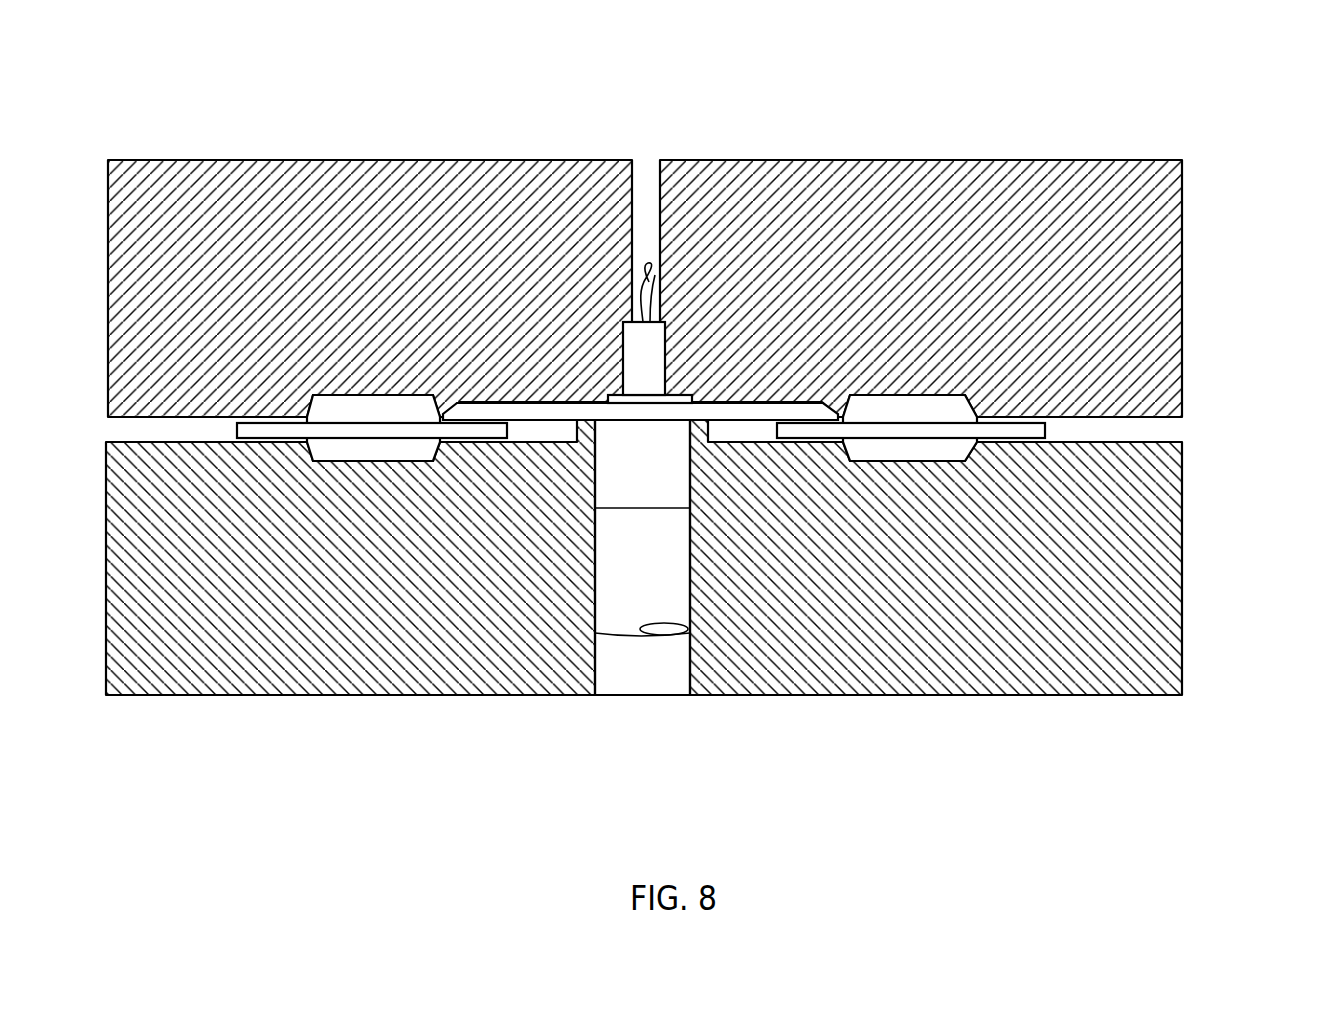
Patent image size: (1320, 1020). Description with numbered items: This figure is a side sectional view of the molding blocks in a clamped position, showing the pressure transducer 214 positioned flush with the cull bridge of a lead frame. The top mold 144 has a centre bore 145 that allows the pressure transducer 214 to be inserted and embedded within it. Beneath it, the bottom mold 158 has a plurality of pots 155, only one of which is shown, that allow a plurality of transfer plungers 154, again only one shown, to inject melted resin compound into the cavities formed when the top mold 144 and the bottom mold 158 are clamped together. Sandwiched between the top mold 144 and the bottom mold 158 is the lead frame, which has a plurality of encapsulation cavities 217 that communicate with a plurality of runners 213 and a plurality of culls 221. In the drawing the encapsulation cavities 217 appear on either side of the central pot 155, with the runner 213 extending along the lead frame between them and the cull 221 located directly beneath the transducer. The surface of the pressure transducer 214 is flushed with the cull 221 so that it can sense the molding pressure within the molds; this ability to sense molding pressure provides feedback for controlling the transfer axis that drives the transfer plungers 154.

The top mold 144 is at (1183, 298).
The bottom mold 158 is at (1183, 590).
The pot 155 is at (593, 548).
The transfer plunger 154 is at (630, 583).
The runner 213 is at (477, 410).
The cull 221 is at (605, 397).
The pressure transducer 214 is at (643, 320).
The centre bore 145 is at (642, 182).
The encapsulation cavity 217 is at (357, 413).